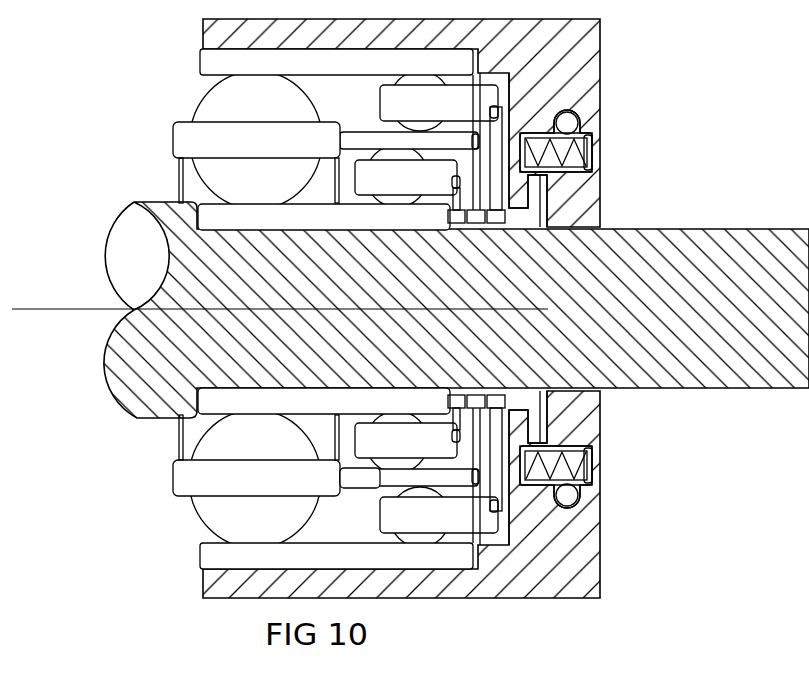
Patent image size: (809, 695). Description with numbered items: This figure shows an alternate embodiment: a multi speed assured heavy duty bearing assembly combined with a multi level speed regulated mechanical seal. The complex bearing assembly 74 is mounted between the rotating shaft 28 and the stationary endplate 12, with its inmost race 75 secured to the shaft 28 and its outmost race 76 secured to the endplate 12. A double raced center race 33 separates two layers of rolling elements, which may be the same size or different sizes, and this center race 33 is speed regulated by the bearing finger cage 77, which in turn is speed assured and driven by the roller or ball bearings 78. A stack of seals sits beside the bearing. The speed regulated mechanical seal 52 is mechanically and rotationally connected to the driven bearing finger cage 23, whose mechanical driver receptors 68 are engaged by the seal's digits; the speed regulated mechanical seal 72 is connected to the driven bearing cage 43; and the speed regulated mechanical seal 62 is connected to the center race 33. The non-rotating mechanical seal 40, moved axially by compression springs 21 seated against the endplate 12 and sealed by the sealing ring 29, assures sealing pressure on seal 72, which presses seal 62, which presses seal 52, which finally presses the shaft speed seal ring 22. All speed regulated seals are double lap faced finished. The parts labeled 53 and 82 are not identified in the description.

The stationary endplate 12 is at (588, 532).
The compression springs 21 is at (587, 158).
The shaft speed seal ring 22 is at (446, 217).
The bearing finger cage 23 is at (407, 176).
The rotating shaft 28 is at (742, 353).
The sealing ring 29 is at (570, 497).
The double raced center race 33 is at (409, 479).
The non-rotating mechanical seal 40 is at (523, 229).
The driven bearing cage 43 is at (439, 101).
The speed regulated mechanical seal 52 is at (458, 229).
The outer race 53 is at (336, 62).
The speed regulated mechanical seal 62 is at (477, 229).
The mechanical driver receptors 68 is at (455, 434).
The speed regulated mechanical seal 72 is at (498, 229).
The complex bearing assembly 74 is at (197, 558).
The inmost race 75 is at (324, 401).
The outmost race 76 is at (336, 556).
The bearing finger cage 77 is at (256, 455).
The roller or ball bearings 78 is at (255, 479).
The spring 82 is at (583, 443).